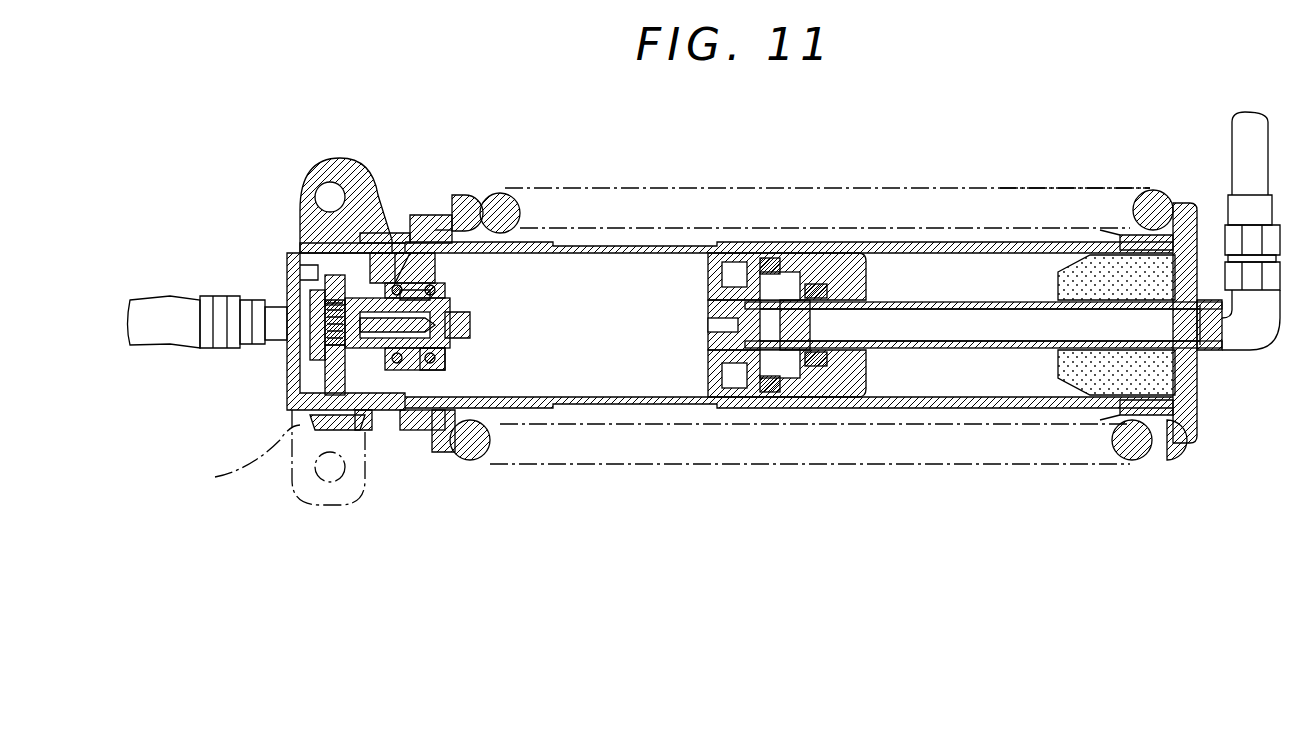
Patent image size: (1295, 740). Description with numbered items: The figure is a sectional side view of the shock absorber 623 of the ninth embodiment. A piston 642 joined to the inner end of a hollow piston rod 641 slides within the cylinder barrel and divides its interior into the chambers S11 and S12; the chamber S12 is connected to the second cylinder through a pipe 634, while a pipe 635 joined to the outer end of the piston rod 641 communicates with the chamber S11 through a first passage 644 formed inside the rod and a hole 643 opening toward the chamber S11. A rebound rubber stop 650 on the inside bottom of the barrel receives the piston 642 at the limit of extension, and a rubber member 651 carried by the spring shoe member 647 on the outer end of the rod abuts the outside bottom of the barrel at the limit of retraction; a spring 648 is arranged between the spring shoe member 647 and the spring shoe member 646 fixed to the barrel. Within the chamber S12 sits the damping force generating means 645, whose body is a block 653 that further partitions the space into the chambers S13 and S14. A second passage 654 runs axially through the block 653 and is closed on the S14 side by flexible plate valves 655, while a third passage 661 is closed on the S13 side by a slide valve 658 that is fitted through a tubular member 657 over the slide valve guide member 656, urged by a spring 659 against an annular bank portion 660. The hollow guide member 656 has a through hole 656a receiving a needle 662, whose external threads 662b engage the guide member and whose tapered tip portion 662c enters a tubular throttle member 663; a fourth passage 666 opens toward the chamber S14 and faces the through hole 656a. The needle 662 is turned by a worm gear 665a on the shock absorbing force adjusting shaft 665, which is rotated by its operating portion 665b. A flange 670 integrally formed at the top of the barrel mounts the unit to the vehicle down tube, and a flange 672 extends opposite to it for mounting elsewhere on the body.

The shock absorber 623 is at (628, 470).
The pipe 634 is at (150, 316).
The pipe 635 is at (1250, 134).
The piston rod 641 is at (958, 344).
The piston 642 is at (720, 410).
The hole 643 is at (782, 340).
The first passage 644 is at (964, 312).
The damping force generating means 645 is at (393, 262).
The spring shoe member 646 is at (445, 447).
The spring shoe member 647 is at (1197, 395).
The spring 648 is at (828, 188).
The rebound rubber stop 650 is at (762, 262).
The rubber member 651 is at (1078, 265).
The block 653 is at (378, 238).
The second passage 654 is at (365, 415).
The plate valves 655 is at (345, 432).
The slide valve guide member 656 is at (497, 205).
The through hole 656a is at (440, 323).
The tubular member 657 is at (440, 210).
The slide valve 658 is at (415, 225).
The spring 659 is at (430, 290).
The annular bank portion 660 is at (405, 268).
The third passage 661 is at (325, 270).
The needle 662 is at (395, 415).
The external threads 662b is at (330, 285).
The tapered tip portion 662c is at (458, 330).
The tubular throttle member 663 is at (432, 358).
The shock absorbing force adjusting shaft 665 is at (338, 345).
The worm gear 665a is at (330, 325).
The operating portion 665b is at (315, 460).
The fourth passage 666 is at (318, 297).
The flange 670 is at (318, 167).
The flange 672 is at (240, 457).
The chamber S11 is at (832, 275).
The chamber S12 is at (670, 255).
The chamber S13 is at (598, 255).
The chamber S14 is at (305, 272).